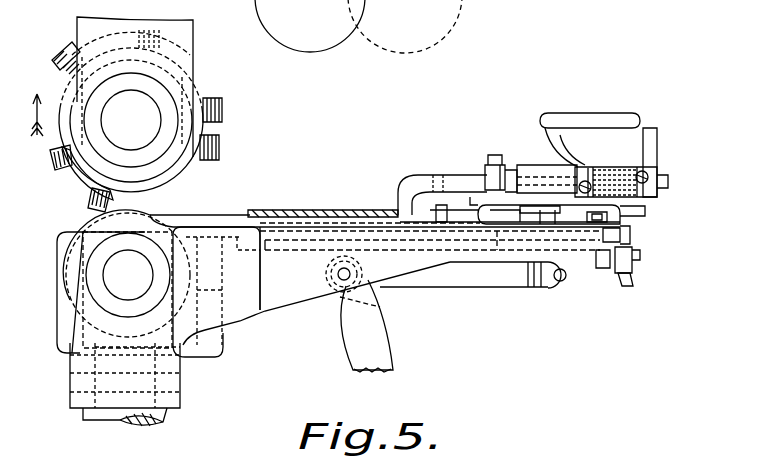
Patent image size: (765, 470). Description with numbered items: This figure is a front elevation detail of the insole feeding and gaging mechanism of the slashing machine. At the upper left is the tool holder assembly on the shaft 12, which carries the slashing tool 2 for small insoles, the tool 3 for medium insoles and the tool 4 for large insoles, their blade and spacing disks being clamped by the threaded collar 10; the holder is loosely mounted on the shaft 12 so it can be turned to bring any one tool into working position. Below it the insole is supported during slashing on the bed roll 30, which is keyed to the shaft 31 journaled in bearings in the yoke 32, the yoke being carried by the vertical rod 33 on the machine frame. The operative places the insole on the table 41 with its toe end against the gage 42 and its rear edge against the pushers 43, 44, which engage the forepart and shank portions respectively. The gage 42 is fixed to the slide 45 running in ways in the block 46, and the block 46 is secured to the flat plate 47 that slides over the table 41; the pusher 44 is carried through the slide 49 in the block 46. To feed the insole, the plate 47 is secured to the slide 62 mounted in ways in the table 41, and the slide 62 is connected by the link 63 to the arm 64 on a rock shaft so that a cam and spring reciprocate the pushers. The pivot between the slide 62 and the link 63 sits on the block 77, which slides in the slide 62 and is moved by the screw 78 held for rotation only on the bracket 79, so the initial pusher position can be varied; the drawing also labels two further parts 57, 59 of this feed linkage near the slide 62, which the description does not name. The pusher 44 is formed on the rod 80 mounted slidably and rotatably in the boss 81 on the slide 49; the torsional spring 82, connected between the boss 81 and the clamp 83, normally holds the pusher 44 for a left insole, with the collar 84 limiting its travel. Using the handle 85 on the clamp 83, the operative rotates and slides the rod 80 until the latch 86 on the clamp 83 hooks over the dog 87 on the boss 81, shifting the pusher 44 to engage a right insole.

The tool 2 is at (212, 132).
The tool 3 is at (75, 181).
The tool 4 is at (102, 42).
The collar 10 is at (173, 83).
The shaft 12 is at (105, 127).
The bed roll 30 is at (77, 260).
The shaft 31 is at (128, 275).
The yoke 32 is at (78, 358).
The vertical rod 33 is at (92, 417).
The table 41 is at (232, 217).
The gage 42 is at (312, 210).
The combined gage and feed member or pusher 43 is at (456, 220).
The combined gage and feed member or pusher 44 is at (408, 192).
The slide 45 is at (523, 206).
The block 46 is at (489, 175).
The flat plate 47 is at (526, 264).
The slide 49 is at (640, 212).
The latch 57 is at (628, 238).
The pivot pin 59 is at (558, 282).
The slide 62 is at (612, 229).
The link 63 is at (490, 277).
The arm 64 is at (385, 350).
The block 77 is at (601, 262).
The screw 78 is at (625, 264).
The bracket 79 is at (609, 272).
The rod 80 is at (510, 180).
The boss 81 is at (520, 212).
The torsional spring 82 is at (613, 147).
The clamp 83 is at (657, 190).
The collar 84 is at (500, 207).
The handle 85 is at (645, 172).
The latch 86 is at (588, 170).
The dog 87 is at (598, 168).